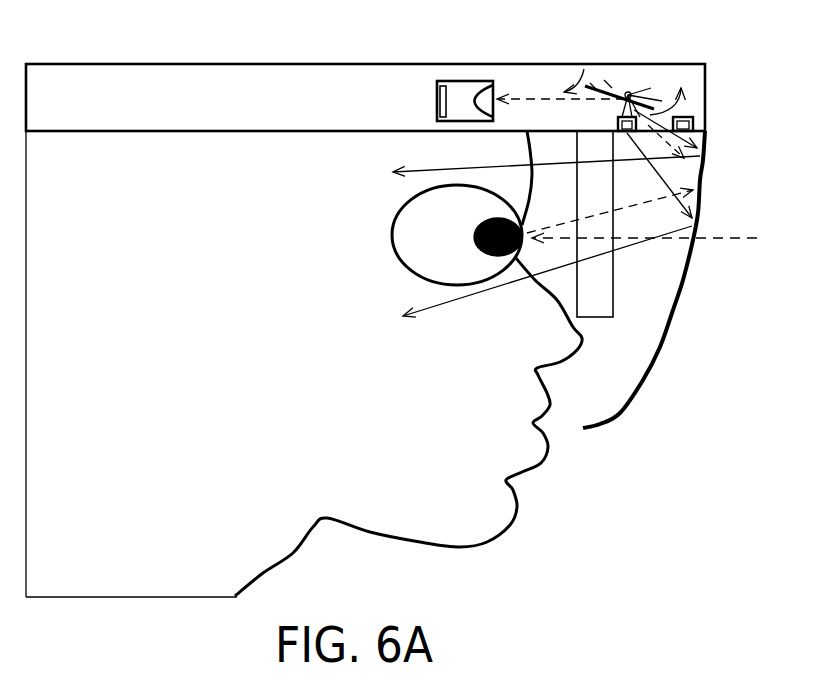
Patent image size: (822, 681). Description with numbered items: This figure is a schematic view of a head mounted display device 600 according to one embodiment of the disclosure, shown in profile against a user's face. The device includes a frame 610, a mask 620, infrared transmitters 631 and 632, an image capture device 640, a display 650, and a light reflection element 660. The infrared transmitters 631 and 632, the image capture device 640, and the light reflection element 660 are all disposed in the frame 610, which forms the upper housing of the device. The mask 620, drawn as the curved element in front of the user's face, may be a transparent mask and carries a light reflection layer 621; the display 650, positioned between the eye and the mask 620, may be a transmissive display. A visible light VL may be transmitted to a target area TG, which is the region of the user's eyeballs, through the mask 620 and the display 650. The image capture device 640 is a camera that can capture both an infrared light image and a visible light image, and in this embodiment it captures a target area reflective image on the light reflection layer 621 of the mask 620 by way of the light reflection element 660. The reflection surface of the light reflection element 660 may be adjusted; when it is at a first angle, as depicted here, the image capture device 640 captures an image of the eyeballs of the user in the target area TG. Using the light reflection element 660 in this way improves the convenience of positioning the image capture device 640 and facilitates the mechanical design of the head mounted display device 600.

The head mounted display device 600 is at (785, 600).
The frame 610 is at (227, 64).
The mask 620 is at (668, 343).
The light reflection layer 621 is at (695, 162).
The infrared transmitter 631 is at (618, 122).
The infrared transmitter 632 is at (694, 123).
The image capture device 640 is at (457, 82).
The display 650 is at (602, 322).
The light reflection element 660 is at (602, 88).
The visible light VL is at (735, 237).
The target area TG is at (375, 253).